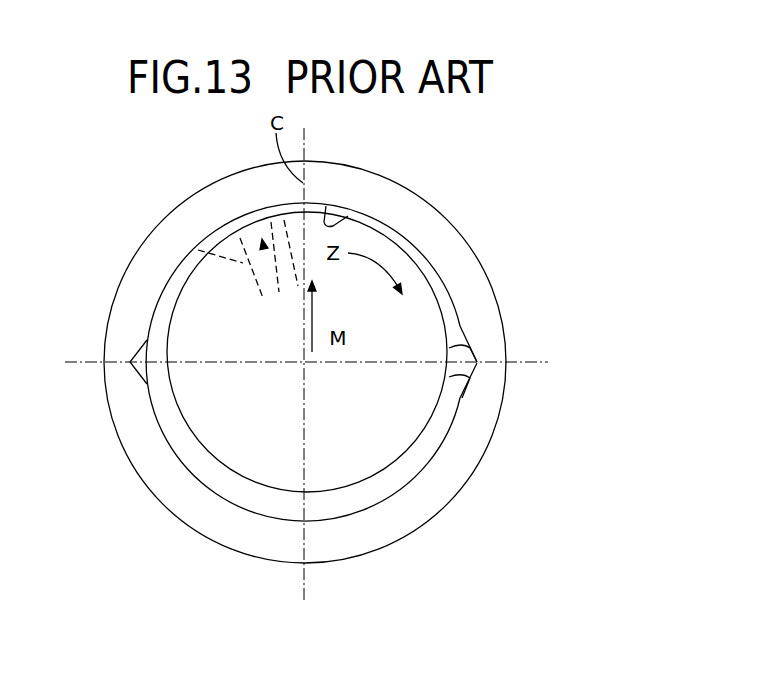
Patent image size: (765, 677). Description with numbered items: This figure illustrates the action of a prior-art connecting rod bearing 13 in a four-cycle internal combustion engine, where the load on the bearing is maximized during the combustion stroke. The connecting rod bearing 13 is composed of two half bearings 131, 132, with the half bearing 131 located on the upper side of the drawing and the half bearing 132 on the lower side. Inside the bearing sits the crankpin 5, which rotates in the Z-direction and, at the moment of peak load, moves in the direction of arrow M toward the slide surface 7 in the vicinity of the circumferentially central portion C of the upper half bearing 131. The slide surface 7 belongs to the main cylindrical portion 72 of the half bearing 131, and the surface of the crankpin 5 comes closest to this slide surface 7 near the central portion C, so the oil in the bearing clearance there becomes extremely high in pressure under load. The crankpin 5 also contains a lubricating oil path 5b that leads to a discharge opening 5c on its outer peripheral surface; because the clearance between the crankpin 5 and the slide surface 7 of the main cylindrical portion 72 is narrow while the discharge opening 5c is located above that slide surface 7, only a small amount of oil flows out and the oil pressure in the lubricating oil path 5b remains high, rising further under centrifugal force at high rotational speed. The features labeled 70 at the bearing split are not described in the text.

The crankpin 5 is at (227, 433).
The lubricating oil path 5b is at (198, 250).
The discharge opening 5c is at (252, 215).
The slide surface 7 is at (326, 212).
The main cylindrical portion 72 is at (384, 198).
The connecting rod bearing 13 is at (474, 236).
The half bearing 131 is at (415, 190).
The half bearing 132 is at (442, 514).
The protrusion at bearing split end 70 is at (452, 343).